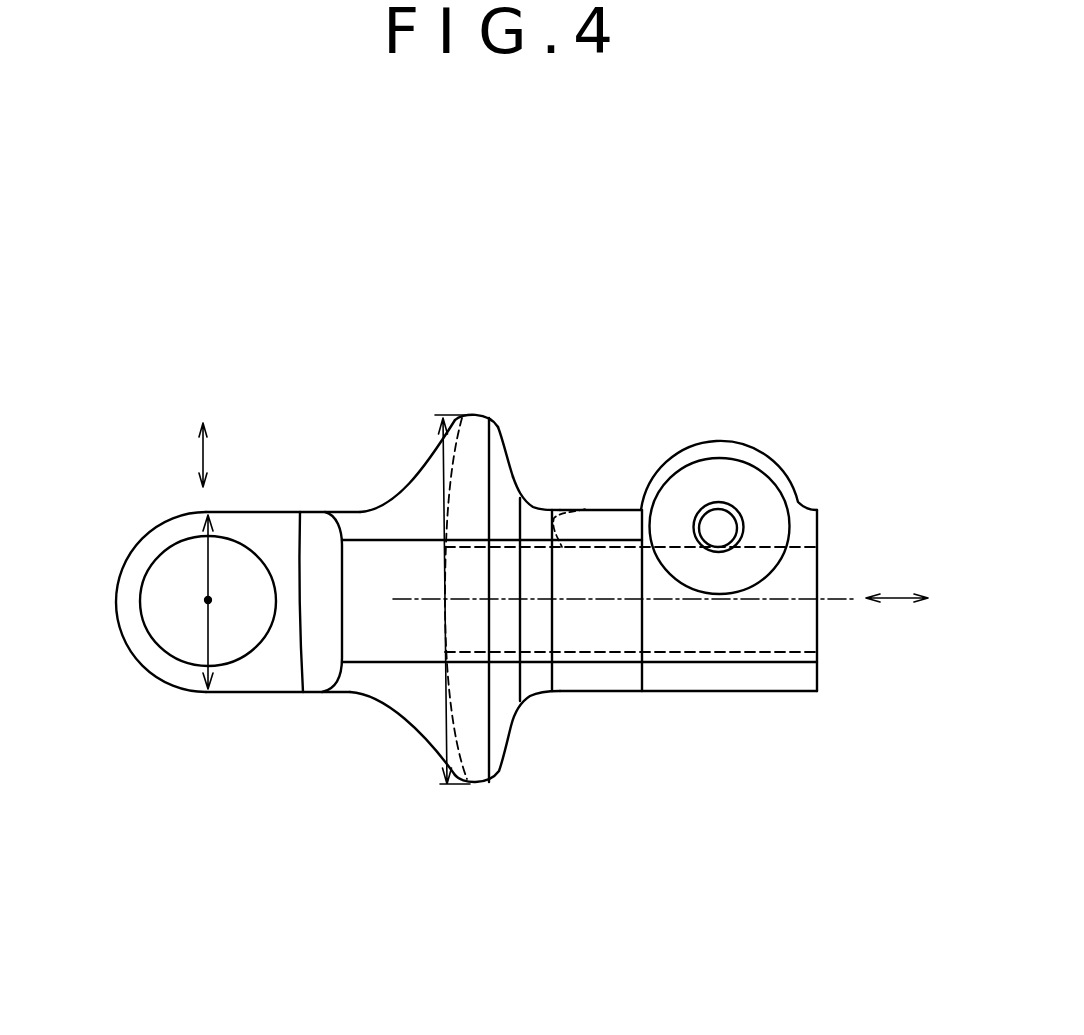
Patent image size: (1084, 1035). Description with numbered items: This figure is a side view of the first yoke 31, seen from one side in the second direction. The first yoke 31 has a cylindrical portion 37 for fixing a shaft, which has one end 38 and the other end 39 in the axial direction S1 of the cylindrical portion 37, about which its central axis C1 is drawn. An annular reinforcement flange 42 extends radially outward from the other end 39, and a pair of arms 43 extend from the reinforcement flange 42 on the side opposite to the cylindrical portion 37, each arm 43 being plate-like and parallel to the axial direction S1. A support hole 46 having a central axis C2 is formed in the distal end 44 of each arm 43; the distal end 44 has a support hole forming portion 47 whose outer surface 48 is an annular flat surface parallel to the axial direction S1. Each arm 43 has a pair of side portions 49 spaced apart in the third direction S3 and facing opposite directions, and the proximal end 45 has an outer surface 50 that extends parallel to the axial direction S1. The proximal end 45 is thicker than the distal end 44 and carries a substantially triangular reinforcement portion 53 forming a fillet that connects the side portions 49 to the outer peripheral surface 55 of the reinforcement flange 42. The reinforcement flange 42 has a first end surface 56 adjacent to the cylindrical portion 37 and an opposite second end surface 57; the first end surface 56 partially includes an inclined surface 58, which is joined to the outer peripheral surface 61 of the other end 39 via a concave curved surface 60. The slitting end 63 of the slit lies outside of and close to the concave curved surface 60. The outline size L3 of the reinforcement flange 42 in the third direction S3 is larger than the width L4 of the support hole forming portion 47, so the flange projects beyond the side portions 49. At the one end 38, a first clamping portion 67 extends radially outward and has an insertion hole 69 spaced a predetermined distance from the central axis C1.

The first yoke 31 is at (505, 405).
The cylindrical portion 37 is at (624, 692).
The one end 38 is at (820, 672).
The other end 39 is at (565, 674).
The reinforcement flange 42 is at (477, 786).
The arm 43 is at (152, 672).
The distal end 44 is at (117, 607).
The proximal end 45 is at (416, 608).
The support hole 46 is at (243, 657).
The support hole forming portion 47 is at (262, 684).
The outer surface 48 is at (190, 676).
The side portion 49 is at (275, 511).
The outer surface 50 is at (373, 650).
The reinforcement portion 53 is at (410, 474).
The outer peripheral surface 55 is at (475, 414).
The first end surface 56 is at (498, 440).
The second end surface 57 is at (450, 483).
The inclined surface 58 is at (509, 459).
The concave curved surface 60 is at (528, 503).
The outer peripheral surface 61 is at (596, 510).
The slitting end 63 is at (585, 508).
The first clamping portion 67 is at (760, 452).
The insertion hole 69 is at (743, 522).
The outline size L3 is at (440, 578).
The width L4 is at (204, 572).
The central axis C1 is at (848, 597).
The central axis C2 is at (209, 602).
The axial direction S1 is at (880, 598).
The third direction S3 is at (197, 452).